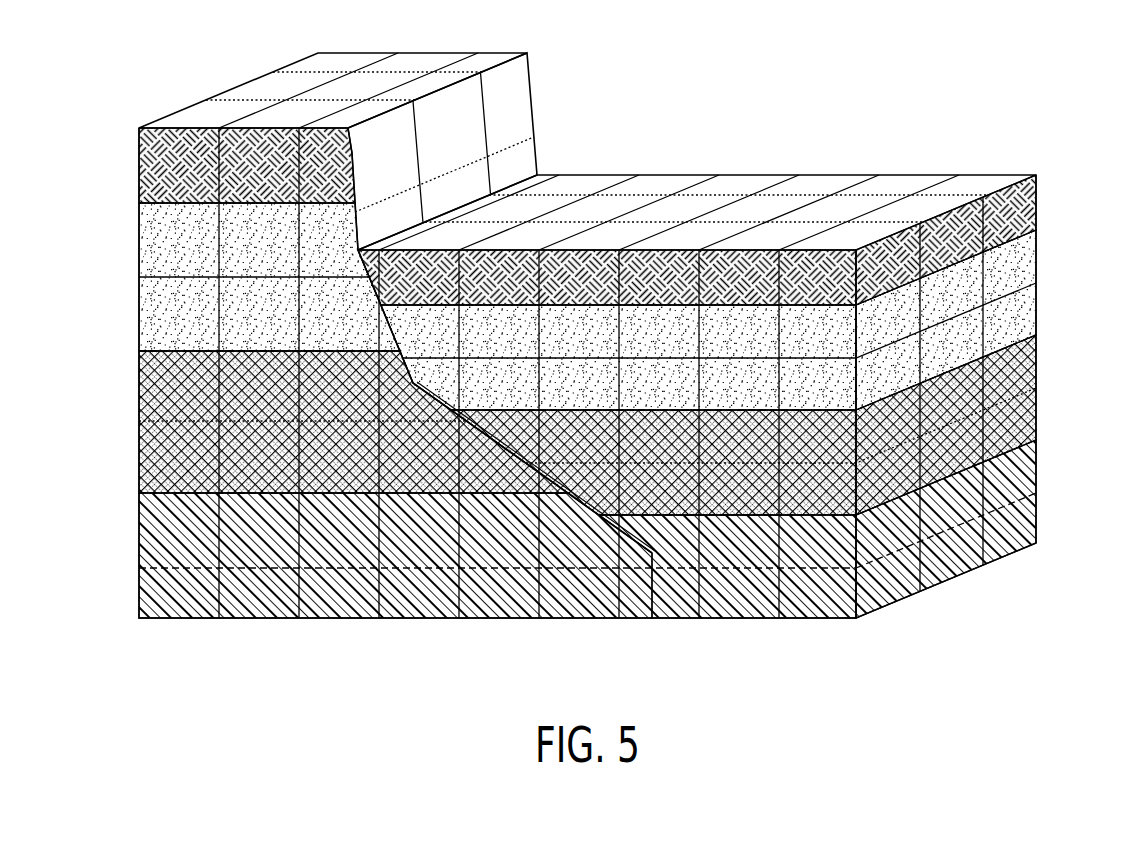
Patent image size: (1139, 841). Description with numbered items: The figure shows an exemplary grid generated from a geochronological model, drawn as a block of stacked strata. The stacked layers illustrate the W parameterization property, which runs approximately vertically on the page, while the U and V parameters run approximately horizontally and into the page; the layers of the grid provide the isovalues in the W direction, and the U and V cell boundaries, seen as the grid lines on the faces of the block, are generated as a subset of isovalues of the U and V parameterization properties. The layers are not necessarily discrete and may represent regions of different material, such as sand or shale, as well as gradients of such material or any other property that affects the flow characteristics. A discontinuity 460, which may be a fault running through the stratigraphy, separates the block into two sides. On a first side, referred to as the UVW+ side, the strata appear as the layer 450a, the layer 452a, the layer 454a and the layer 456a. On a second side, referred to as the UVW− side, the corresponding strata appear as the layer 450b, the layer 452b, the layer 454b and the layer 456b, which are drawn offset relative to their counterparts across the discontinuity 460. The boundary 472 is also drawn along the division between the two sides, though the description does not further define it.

The layer (first side) 450a is at (1028, 504).
The layer (second side) 450b is at (148, 592).
The layer (first side) 452a is at (1027, 398).
The layer (second side) 452b is at (148, 435).
The layer (first side) 454a is at (1025, 297).
The layer (second side) 454b is at (150, 288).
The layer (first side) 456a is at (1025, 212).
The layer (second side) 456b is at (150, 182).
The discontinuity 460 is at (352, 153).
The boundary / interface between portions 472 is at (413, 383).